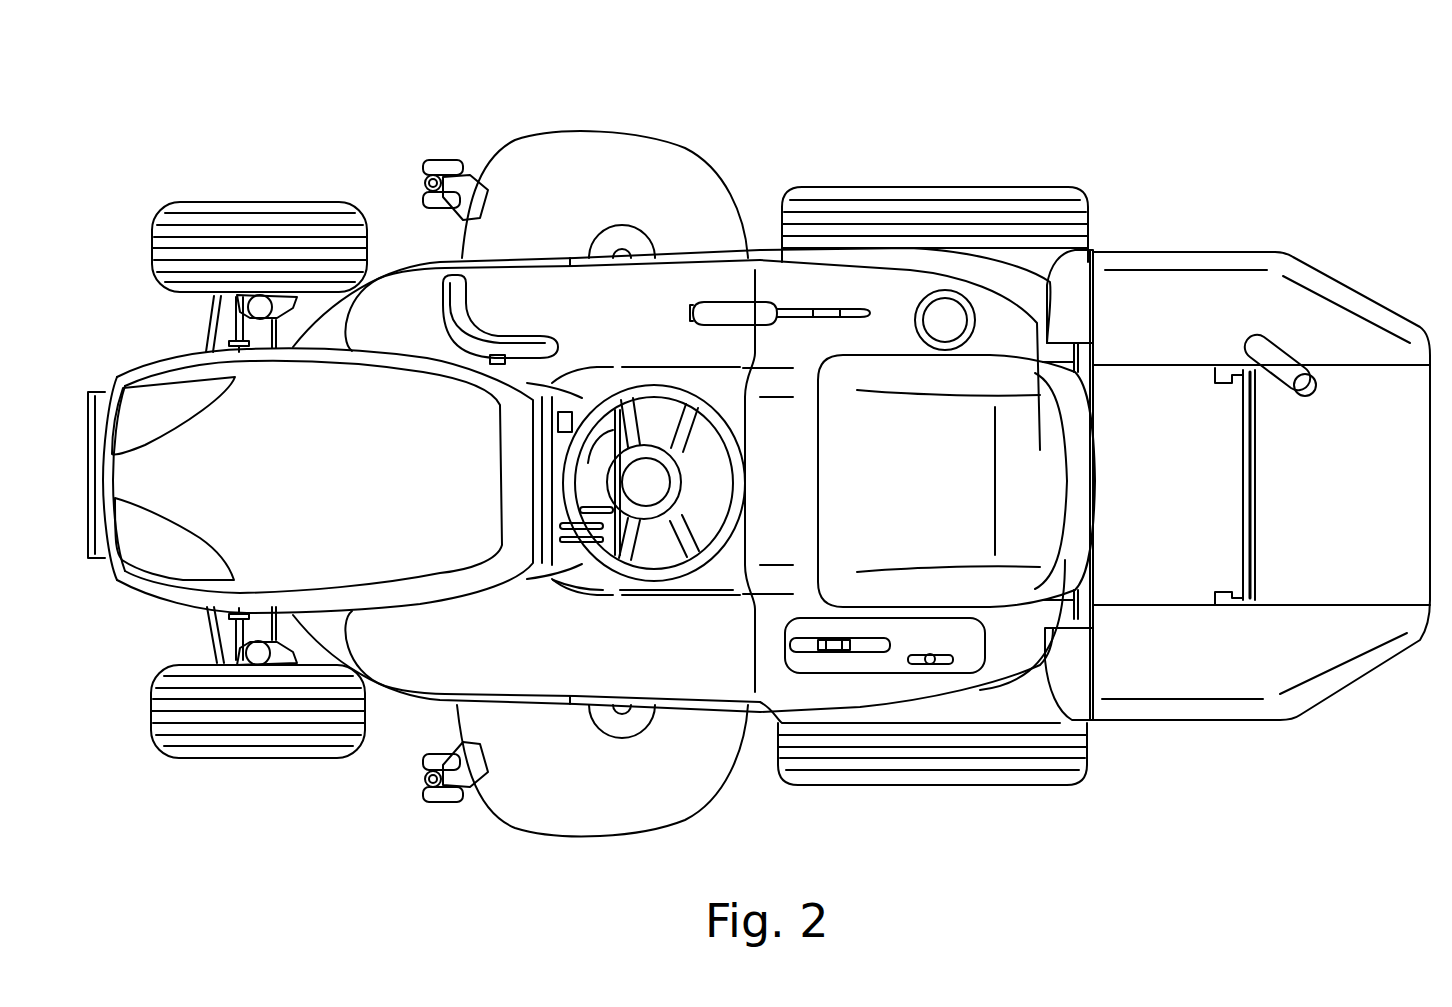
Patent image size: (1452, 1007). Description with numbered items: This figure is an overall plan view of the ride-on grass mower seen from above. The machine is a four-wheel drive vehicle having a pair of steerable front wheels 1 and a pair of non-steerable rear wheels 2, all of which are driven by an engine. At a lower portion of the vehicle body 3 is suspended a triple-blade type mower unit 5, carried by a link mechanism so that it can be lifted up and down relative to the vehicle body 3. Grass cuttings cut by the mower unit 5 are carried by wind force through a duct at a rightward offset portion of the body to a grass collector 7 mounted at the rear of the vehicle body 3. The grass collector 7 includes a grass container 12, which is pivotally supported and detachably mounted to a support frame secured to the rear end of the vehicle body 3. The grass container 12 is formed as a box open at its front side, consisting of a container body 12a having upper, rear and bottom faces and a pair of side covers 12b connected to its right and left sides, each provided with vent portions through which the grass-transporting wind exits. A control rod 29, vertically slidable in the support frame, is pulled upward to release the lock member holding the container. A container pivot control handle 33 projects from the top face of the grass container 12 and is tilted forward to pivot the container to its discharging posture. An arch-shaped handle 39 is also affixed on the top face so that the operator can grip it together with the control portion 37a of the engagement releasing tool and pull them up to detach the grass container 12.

The front wheels 1 is at (229, 206).
The rear wheels 2 is at (920, 186).
The vehicle body 3 is at (700, 714).
The mower unit 5 is at (552, 126).
The grass collector 7 is at (1263, 480).
The grass container 12 is at (1263, 509).
The container body 12a is at (1372, 593).
The side covers 12b is at (1190, 288).
The control rod 29 is at (1058, 342).
The container pivot control handle 33 is at (1251, 344).
The control portion of the engagement releasing tool 37a is at (1258, 520).
The handle 39 is at (1245, 472).